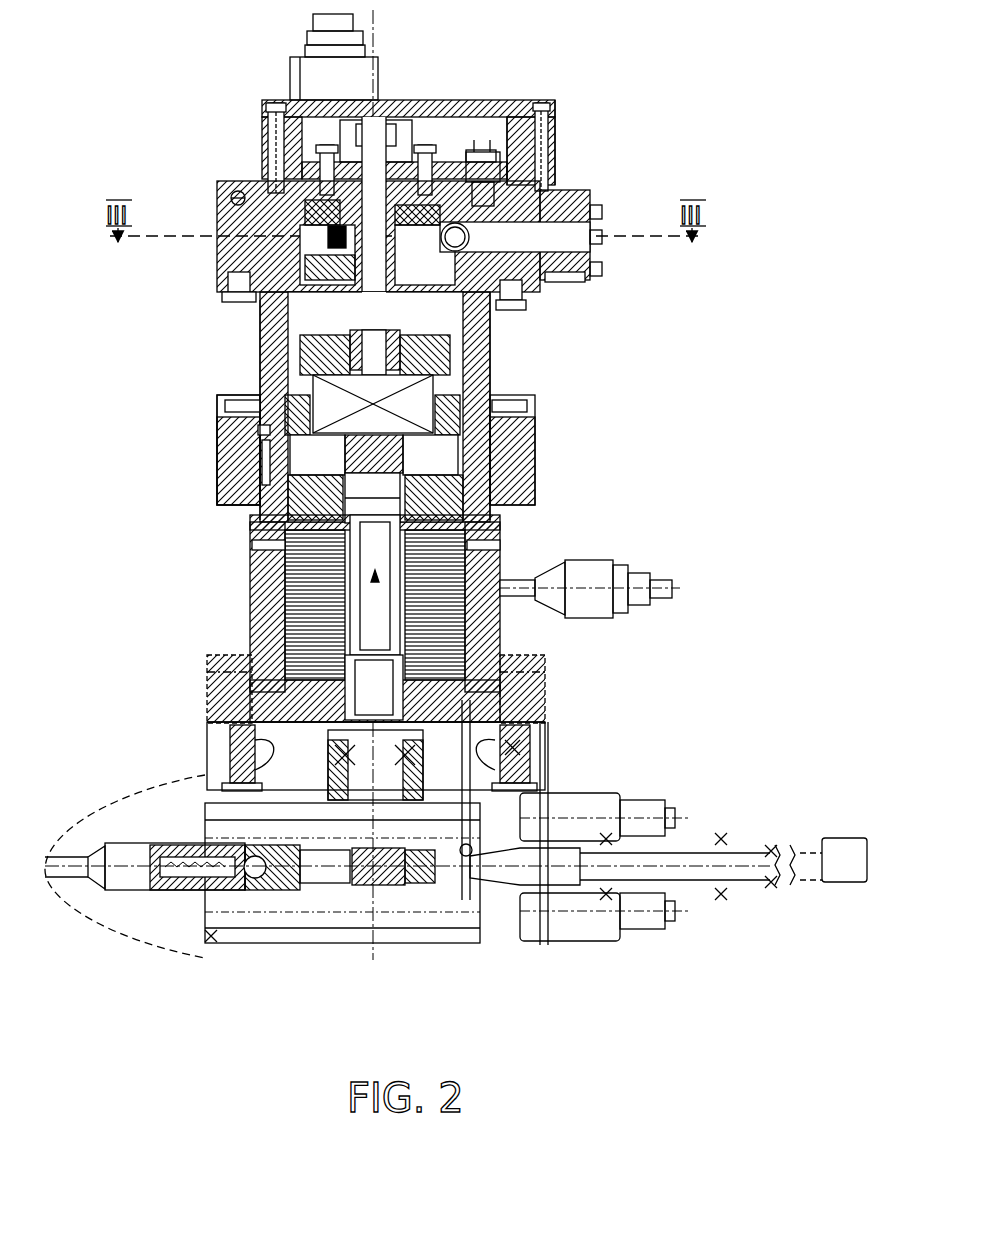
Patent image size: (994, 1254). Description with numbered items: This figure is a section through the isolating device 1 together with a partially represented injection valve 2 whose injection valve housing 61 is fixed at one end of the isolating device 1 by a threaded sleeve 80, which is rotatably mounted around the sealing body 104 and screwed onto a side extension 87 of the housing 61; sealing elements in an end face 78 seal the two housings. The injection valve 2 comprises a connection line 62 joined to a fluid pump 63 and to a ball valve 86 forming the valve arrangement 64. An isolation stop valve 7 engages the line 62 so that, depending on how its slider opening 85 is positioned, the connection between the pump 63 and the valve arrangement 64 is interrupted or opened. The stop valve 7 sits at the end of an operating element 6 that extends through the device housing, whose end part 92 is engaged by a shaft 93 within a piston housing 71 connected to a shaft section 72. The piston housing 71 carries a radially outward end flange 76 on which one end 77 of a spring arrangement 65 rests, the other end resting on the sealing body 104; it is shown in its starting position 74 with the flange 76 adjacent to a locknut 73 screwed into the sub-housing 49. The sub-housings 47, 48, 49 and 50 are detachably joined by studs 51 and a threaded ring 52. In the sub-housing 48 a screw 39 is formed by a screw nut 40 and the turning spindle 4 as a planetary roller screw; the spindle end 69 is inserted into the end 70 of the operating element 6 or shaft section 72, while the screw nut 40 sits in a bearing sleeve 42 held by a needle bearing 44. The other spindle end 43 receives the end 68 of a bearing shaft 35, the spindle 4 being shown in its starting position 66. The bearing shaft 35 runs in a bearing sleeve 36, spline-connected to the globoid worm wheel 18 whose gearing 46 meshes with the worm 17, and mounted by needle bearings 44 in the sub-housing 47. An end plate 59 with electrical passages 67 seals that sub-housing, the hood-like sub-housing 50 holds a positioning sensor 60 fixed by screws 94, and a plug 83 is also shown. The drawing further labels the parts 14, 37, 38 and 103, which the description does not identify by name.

The isolating device 1 is at (540, 66).
The injection valve 2 is at (300, 968).
The turning spindle 4 is at (465, 355).
The operating element 6 is at (256, 635).
The isolation stop valve 7 is at (362, 910).
The hydraulic cylinder cap 14 is at (375, 72).
The worm 17 is at (560, 200).
The worm wheel 18 is at (218, 238).
The bearing shaft 35 is at (540, 302).
The bearing sleeve 36 is at (218, 183).
The housing wall 37 is at (218, 205).
The passage 38 is at (218, 260).
The screw 39 is at (472, 386).
The screw nut 40 is at (282, 398).
The bearing sleeve 42 is at (276, 418).
The end of turning spindle 43 is at (420, 368).
The needle bearing 44 is at (540, 160).
The gearing 46 is at (218, 252).
The sub-housing 47 is at (218, 222).
The sub-housing 48 is at (262, 342).
The sub-housing 49 is at (262, 588).
The sub-housing 50 is at (482, 104).
The studs 51 is at (226, 298).
The threaded ring 52 is at (532, 456).
The end plate 59 is at (455, 118).
The positioning sensor 60 is at (345, 130).
The injection valve housing 61 is at (598, 945).
The connection line 62 is at (458, 882).
The fluid pump 63 is at (846, 855).
The valve arrangement 64 is at (165, 905).
The spring arrangement 65 is at (500, 634).
The starting position 66 is at (325, 355).
The electrical passages 67 is at (548, 150).
The end of bearing shaft 68 is at (272, 378).
The end of turning spindle 69 is at (218, 472).
The end of operating element 70 is at (218, 448).
The piston housing 71 is at (495, 522).
The shaft section 72 is at (512, 481).
The locknut 73 is at (218, 505).
The starting position 74 is at (482, 607).
The end flange 76 is at (532, 495).
The end of spring arrangement 77 is at (272, 607).
The end face 78 is at (240, 757).
The threaded sleeve 80 is at (545, 692).
The plug 83 is at (592, 236).
The slider opening 85 is at (390, 885).
The ball valve 86 is at (257, 882).
The side extension 87 is at (470, 762).
The end part 92 is at (492, 726).
The shaft 93 is at (500, 546).
The screws 94 is at (290, 130).
The cylinder wall 103 is at (258, 334).
The sealing body 104 is at (195, 738).